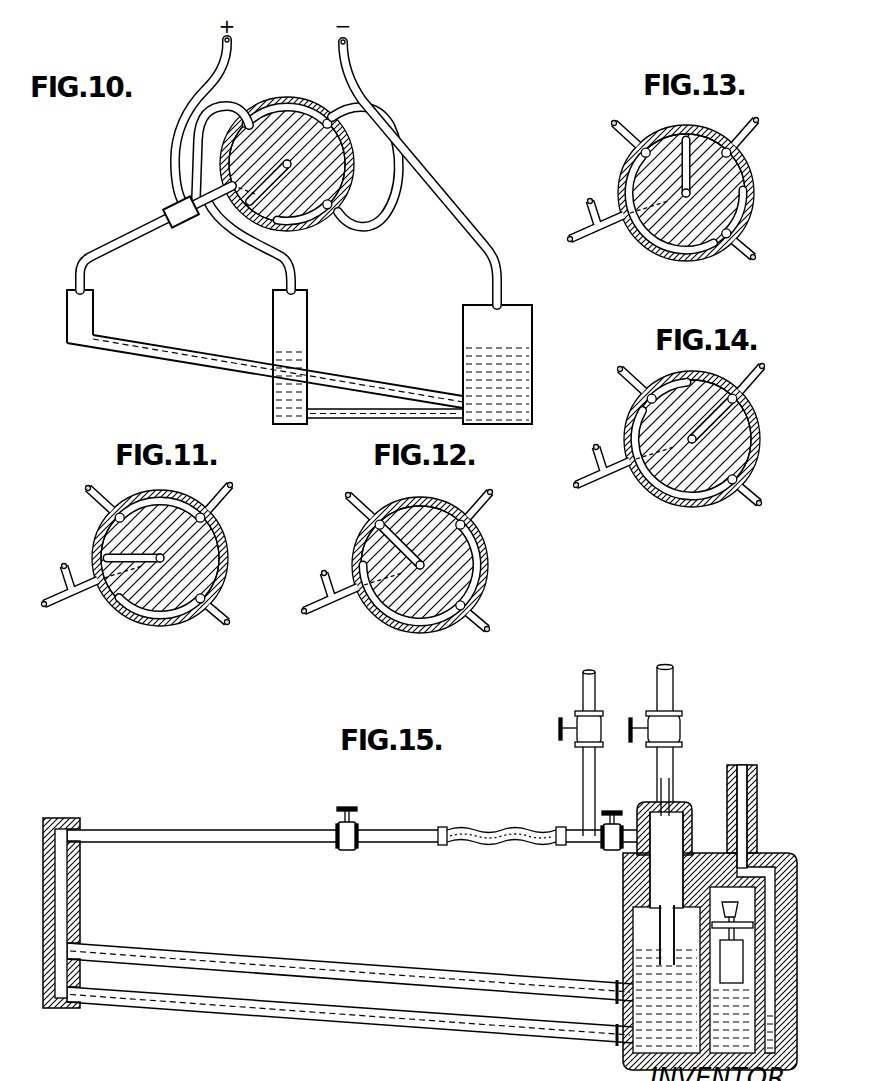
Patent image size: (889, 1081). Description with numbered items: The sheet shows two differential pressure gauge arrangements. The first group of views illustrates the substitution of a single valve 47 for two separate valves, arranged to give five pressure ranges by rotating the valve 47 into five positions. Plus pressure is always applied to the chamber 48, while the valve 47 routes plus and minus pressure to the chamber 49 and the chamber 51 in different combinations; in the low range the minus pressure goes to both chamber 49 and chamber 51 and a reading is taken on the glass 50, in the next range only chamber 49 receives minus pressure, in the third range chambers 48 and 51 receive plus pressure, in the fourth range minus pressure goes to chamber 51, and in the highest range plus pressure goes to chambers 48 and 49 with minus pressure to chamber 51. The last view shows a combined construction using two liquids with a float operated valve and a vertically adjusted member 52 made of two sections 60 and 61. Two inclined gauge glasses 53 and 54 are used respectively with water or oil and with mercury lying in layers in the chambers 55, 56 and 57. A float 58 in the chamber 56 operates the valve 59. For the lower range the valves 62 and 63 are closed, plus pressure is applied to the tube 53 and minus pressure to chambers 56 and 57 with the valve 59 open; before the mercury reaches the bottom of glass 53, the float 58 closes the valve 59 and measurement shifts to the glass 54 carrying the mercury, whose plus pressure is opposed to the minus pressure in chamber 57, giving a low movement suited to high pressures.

In FIG. 10, the valve 47 is at (232, 157).
In FIG. 11, the valve 47 is at (157, 563).
In FIG. 12, the valve 47 is at (400, 581).
In FIG. 13, the valve 47 is at (669, 211).
In FIG. 14, the valve 47 is at (673, 456).
In FIG. 10, the chamber 48 is at (67, 316).
In FIG. 10, the chamber 49 is at (472, 322).
In FIG. 10, the glass 50 is at (192, 347).
In FIG. 10, the chamber 51 is at (283, 305).
In FIG. 15, the vertically adjusted member 52 is at (684, 806).
In FIG. 15, the inclined gauge glass 53 is at (502, 983).
In FIG. 15, the inclined gauge glass 54 is at (460, 1022).
In FIG. 15, the chamber 55 is at (643, 978).
In FIG. 15, the chamber 56 is at (740, 1003).
In FIG. 15, the chamber 57 is at (772, 1040).
In FIG. 15, the float 58 is at (735, 957).
In FIG. 15, the valve 59 is at (740, 910).
In FIG. 15, the section 60 is at (661, 931).
In FIG. 15, the section 61 is at (656, 822).
In FIG. 15, the valve 62 is at (608, 851).
In FIG. 15, the valve 63 is at (674, 729).